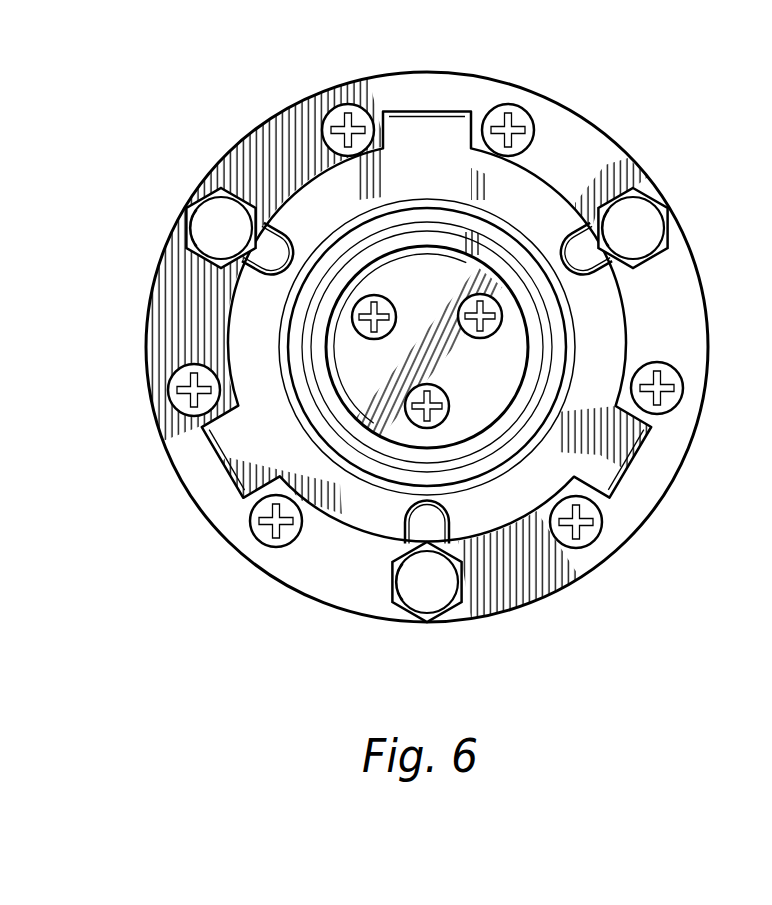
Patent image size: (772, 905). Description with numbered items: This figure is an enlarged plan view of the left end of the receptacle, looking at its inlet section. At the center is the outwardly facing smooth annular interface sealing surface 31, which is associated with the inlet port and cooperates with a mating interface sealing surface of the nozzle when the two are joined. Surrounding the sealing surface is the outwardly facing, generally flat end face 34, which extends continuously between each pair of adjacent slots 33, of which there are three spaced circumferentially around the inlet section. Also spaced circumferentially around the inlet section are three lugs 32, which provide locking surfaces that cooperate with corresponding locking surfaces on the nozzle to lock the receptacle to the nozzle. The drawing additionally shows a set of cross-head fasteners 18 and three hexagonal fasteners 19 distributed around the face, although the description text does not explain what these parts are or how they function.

The screws 18 is at (530, 108).
The hex bolts 19 is at (207, 210).
The interface sealing surface 31 is at (543, 353).
The lugs 32 is at (445, 148).
The slots 33 is at (278, 248).
The end face 34 is at (274, 343).